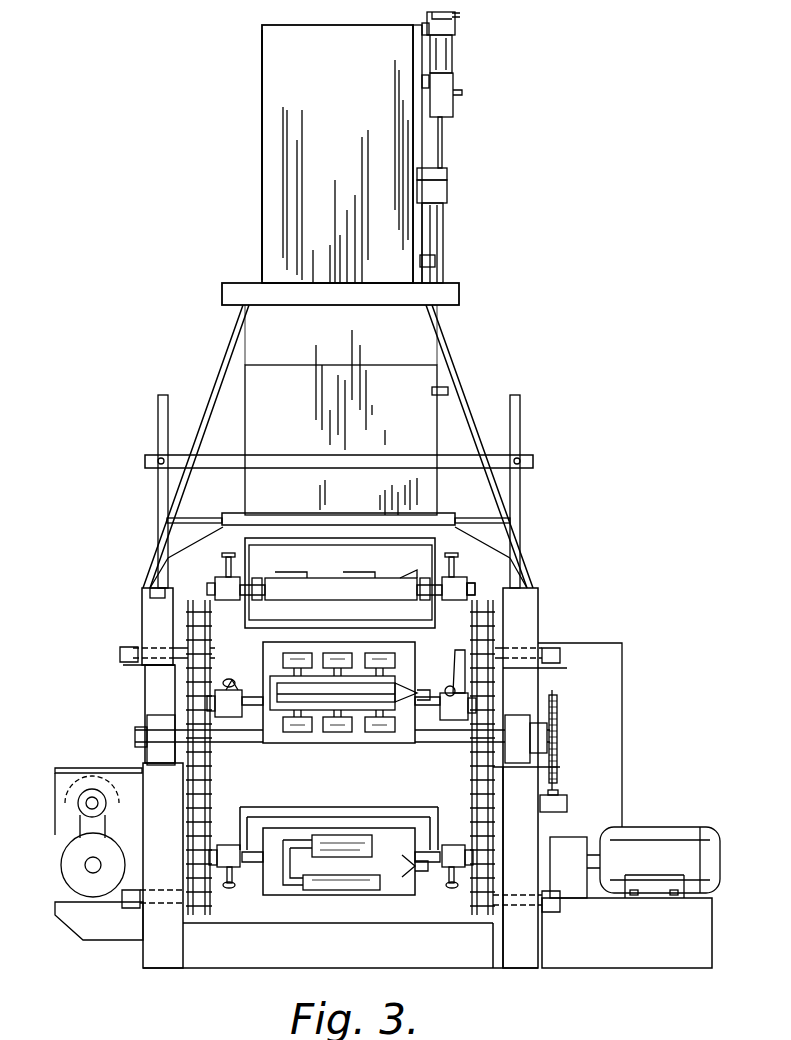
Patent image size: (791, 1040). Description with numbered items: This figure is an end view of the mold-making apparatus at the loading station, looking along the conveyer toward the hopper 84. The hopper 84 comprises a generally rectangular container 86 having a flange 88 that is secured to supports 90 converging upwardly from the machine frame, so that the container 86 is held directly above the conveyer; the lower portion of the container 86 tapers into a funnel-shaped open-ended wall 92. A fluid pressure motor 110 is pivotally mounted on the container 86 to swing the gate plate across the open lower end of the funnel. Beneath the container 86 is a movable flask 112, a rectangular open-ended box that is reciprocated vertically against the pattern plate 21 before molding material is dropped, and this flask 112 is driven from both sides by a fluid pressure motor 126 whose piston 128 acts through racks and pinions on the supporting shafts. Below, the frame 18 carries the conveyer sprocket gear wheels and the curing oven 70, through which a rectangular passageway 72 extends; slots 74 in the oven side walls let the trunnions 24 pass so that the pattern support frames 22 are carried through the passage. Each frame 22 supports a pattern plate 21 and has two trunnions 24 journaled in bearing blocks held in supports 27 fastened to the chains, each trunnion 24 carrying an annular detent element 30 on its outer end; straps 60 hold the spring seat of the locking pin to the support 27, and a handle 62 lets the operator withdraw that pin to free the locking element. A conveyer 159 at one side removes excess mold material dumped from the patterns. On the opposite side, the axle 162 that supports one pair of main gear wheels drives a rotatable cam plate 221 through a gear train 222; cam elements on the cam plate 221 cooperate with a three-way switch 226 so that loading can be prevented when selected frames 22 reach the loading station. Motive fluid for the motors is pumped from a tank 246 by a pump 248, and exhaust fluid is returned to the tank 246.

The hopper 84 is at (246, 111).
The container 86 is at (262, 165).
The fluid pressure motor 126 is at (446, 53).
The piston 128 is at (445, 137).
The fluid pressure motor 110 is at (433, 230).
The flange 88 is at (458, 295).
The supports 90 is at (240, 323).
The funnel-shaped open-ended wall 92 is at (248, 365).
The flask 112 is at (252, 490).
The curing oven 70 is at (425, 525).
The passageway 72 is at (430, 556).
The frame 18 is at (148, 627).
The axle 162 is at (515, 715).
The pattern support frame 22 is at (310, 592).
The pattern plate 21 is at (325, 578).
The slots 74 is at (258, 592).
The trunnions 24 is at (265, 595).
The support 27 is at (215, 585).
The straps 60 is at (226, 565).
The handle 62 is at (232, 543).
The annular detent element 30 is at (467, 585).
The gear train 222 is at (558, 700).
The cam plate 221 is at (558, 723).
The three-way switch 226 is at (562, 800).
The pump 248 is at (570, 837).
The tank 246 is at (628, 955).
The conveyer 159 is at (100, 773).